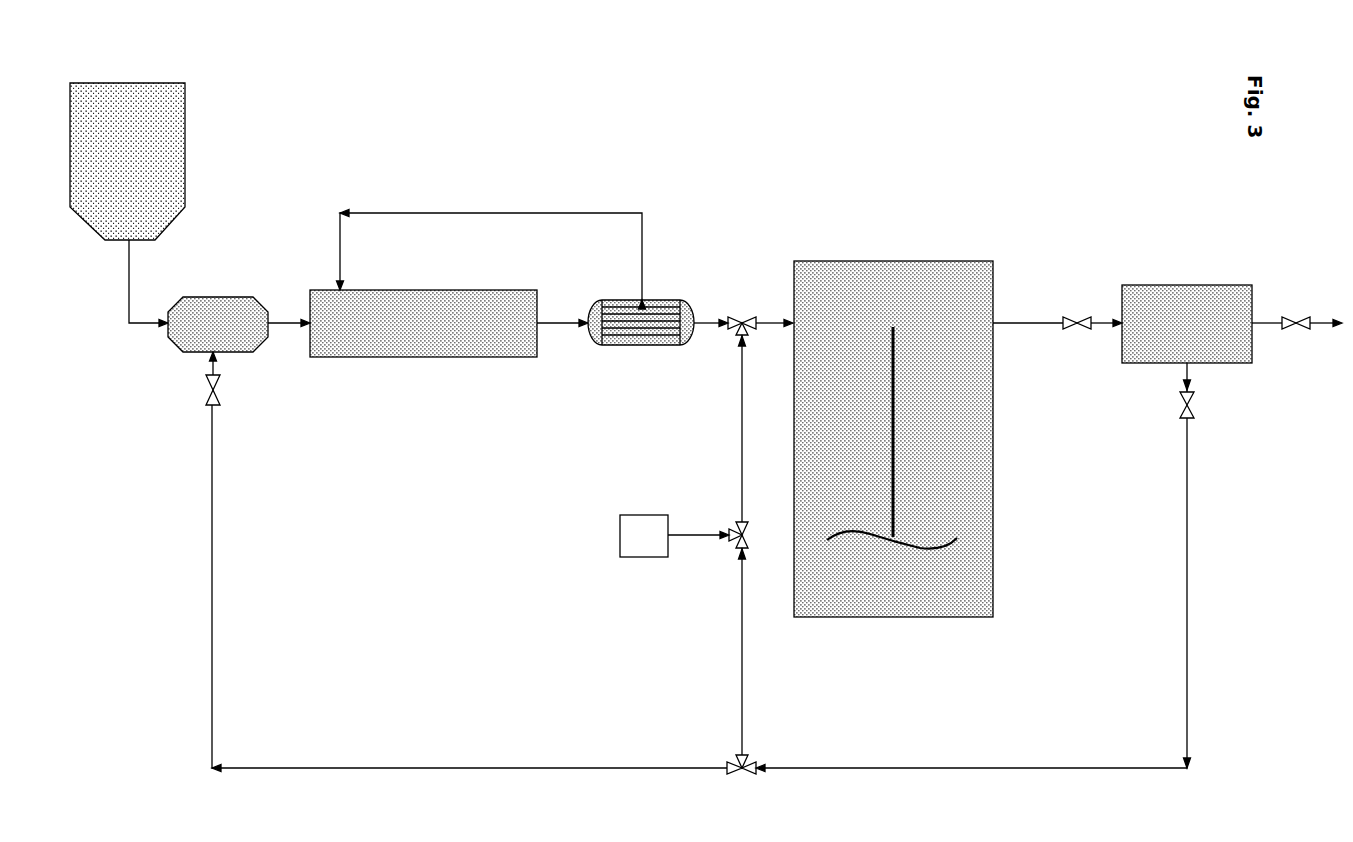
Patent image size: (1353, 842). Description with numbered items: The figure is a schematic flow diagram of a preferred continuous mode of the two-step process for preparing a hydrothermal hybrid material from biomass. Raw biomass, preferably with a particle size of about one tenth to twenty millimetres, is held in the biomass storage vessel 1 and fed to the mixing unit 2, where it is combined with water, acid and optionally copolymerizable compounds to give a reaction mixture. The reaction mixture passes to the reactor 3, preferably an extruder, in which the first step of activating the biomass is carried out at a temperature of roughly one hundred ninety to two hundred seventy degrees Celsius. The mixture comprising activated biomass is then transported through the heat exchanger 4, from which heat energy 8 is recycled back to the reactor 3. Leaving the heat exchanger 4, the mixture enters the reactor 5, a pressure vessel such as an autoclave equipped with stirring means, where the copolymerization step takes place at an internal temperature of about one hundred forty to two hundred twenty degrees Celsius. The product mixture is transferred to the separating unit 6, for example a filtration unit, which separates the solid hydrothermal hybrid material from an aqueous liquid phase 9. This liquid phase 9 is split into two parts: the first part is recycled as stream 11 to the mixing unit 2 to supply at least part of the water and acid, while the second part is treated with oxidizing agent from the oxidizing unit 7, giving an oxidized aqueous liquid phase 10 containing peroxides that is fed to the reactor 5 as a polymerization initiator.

The biomass storage vessel 1 is at (127, 192).
The mixing unit 2 is at (239, 336).
The reactor 3 is at (449, 310).
The heat exchanger 4 is at (658, 309).
The reactor 5 is at (928, 425).
The separating unit 6 is at (1232, 310).
The oxidizing unit 7 is at (674, 522).
The heat energy 8 is at (491, 249).
The liquid phase 9 is at (982, 567).
The oxidized aqueous liquid phase 10 is at (724, 545).
The stream of aqueous liquid phase 11 is at (451, 588).